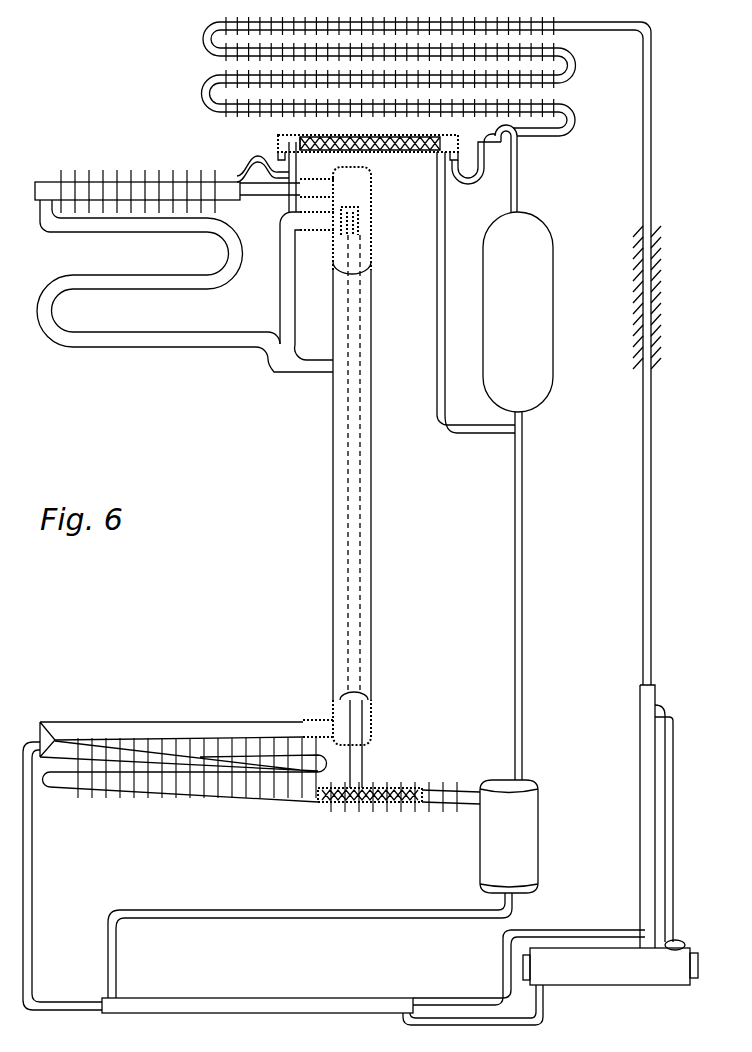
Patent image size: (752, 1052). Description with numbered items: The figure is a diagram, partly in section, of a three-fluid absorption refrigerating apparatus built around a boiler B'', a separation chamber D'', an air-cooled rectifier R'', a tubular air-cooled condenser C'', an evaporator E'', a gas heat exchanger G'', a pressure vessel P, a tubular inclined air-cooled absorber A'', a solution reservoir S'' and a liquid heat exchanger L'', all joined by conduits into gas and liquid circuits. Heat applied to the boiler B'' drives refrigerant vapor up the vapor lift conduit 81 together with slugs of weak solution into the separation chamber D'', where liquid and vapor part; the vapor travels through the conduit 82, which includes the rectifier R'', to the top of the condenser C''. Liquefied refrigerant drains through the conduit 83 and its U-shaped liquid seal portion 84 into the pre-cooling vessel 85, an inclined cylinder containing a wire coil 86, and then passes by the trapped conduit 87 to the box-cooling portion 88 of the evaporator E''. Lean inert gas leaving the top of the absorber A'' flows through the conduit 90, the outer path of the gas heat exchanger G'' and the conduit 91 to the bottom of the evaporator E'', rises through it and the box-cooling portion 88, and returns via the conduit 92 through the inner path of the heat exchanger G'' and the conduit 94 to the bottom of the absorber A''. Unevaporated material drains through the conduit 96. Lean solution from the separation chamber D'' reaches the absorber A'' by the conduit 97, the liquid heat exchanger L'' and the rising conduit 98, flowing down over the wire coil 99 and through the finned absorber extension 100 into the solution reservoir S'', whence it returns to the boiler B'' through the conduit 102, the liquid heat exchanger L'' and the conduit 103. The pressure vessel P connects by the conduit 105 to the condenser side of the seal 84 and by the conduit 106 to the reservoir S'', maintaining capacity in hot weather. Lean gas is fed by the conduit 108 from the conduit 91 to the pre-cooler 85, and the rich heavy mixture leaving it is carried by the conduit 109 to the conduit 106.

The vapor lift conduit 81 is at (673, 800).
The conduit 82 is at (652, 587).
The conduit 83 is at (528, 137).
The U-shaped liquid seal portion 84 is at (468, 184).
The pre-cooling vessel 85 is at (341, 137).
The wire coil 86 is at (391, 152).
The conduit 87 is at (253, 160).
The box-cooling portion 88 is at (166, 182).
The conduit 90 is at (177, 722).
The conduit 91 is at (295, 280).
The conduit 92 is at (282, 196).
The conduit 94 is at (362, 762).
The conduit 96 is at (318, 374).
The conduit 97 is at (590, 930).
The rising conduit 98 is at (33, 868).
The wire coil 99 is at (334, 805).
The absorber extension 100 is at (439, 790).
The conduit 102 is at (342, 910).
The conduit 103 is at (405, 1024).
The conduit 105 is at (518, 185).
The conduit 106 is at (523, 542).
The conduit 108 is at (296, 169).
The conduit 109 is at (437, 283).
The condenser C'' is at (401, 76).
The evaporator E'' is at (148, 279).
The air-cooled rectifier R'' is at (668, 297).
The gas heat exchanger G'' is at (332, 456).
The pressure vessel P is at (518, 312).
The solution reservoir S'' is at (509, 836).
The absorber A'' is at (248, 786).
The liquid heat exchanger L'' is at (257, 984).
The boiler B'' is at (610, 962).
The separation chamber D'' is at (626, 816).